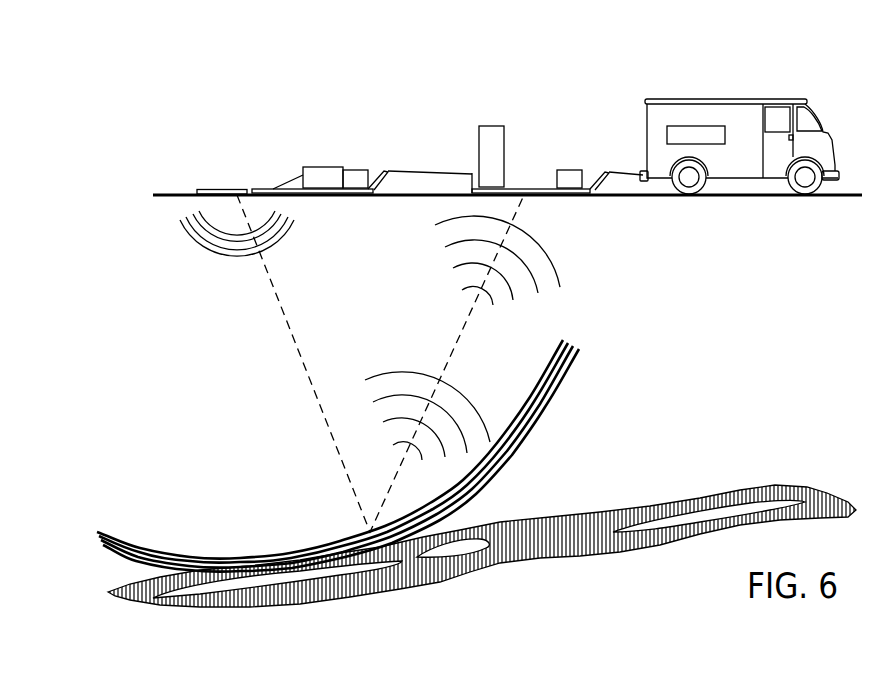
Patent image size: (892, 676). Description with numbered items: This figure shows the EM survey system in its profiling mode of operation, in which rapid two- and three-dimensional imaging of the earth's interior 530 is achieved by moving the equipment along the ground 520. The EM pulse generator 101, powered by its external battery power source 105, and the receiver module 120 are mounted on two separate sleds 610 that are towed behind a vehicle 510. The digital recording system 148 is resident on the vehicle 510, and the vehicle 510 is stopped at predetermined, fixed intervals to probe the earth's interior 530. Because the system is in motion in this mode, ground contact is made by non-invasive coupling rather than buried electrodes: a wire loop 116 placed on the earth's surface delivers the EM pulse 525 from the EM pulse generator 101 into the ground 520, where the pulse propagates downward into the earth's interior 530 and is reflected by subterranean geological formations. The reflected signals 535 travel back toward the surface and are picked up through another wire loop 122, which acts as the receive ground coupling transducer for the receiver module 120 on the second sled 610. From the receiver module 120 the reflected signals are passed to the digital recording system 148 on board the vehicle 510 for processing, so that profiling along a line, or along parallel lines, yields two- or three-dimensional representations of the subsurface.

The EM pulse generator 101 is at (322, 175).
The power source 105 is at (360, 177).
The wire loop 116 is at (225, 191).
The receiver module 120 is at (567, 180).
The wire loop 122 is at (498, 140).
The digital recording system 148 is at (708, 138).
The vehicle 510 is at (719, 112).
The ground 520 is at (170, 185).
The EM pulse 525 is at (193, 237).
The earth's interior 530 is at (195, 443).
The reflected signals 535 is at (388, 372).
The sleds 610 is at (337, 197).